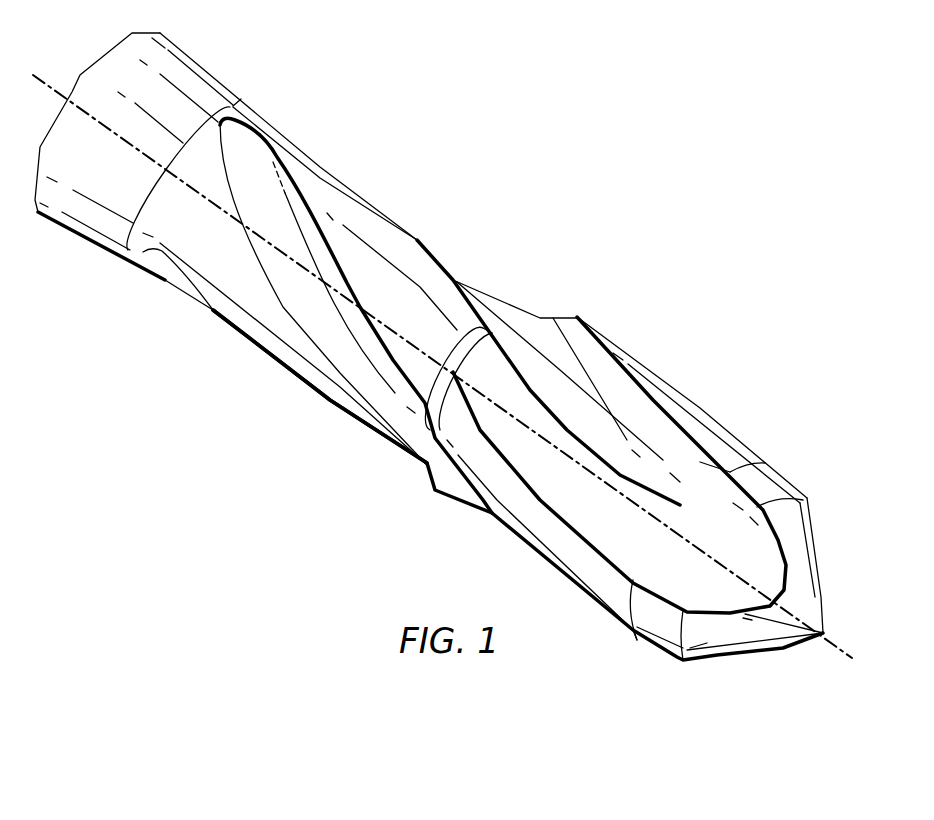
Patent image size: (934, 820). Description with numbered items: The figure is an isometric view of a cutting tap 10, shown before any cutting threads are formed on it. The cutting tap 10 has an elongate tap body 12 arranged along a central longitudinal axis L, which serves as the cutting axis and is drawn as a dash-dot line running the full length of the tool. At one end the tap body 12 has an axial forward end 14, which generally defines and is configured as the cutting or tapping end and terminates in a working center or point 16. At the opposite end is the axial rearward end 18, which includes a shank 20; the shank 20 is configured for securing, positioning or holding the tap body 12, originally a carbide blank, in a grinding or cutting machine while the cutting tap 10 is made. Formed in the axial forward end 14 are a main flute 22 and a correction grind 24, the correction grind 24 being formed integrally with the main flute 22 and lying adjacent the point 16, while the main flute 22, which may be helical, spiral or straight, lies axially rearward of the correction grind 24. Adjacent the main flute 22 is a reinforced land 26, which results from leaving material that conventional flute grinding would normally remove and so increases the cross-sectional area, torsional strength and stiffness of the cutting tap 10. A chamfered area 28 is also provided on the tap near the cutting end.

The cutting tap 10 is at (667, 264).
The tap body 12 is at (316, 409).
The axial forward end 14 is at (413, 267).
The working center or point 16 is at (826, 633).
The axial rearward end 18 is at (210, 60).
The shank 20 is at (83, 210).
The main flute 22 is at (523, 343).
The correction grind 24 is at (710, 497).
The reinforced land 26 is at (547, 473).
The chamfered area 28 is at (658, 628).
The central longitudinal axis L is at (851, 657).